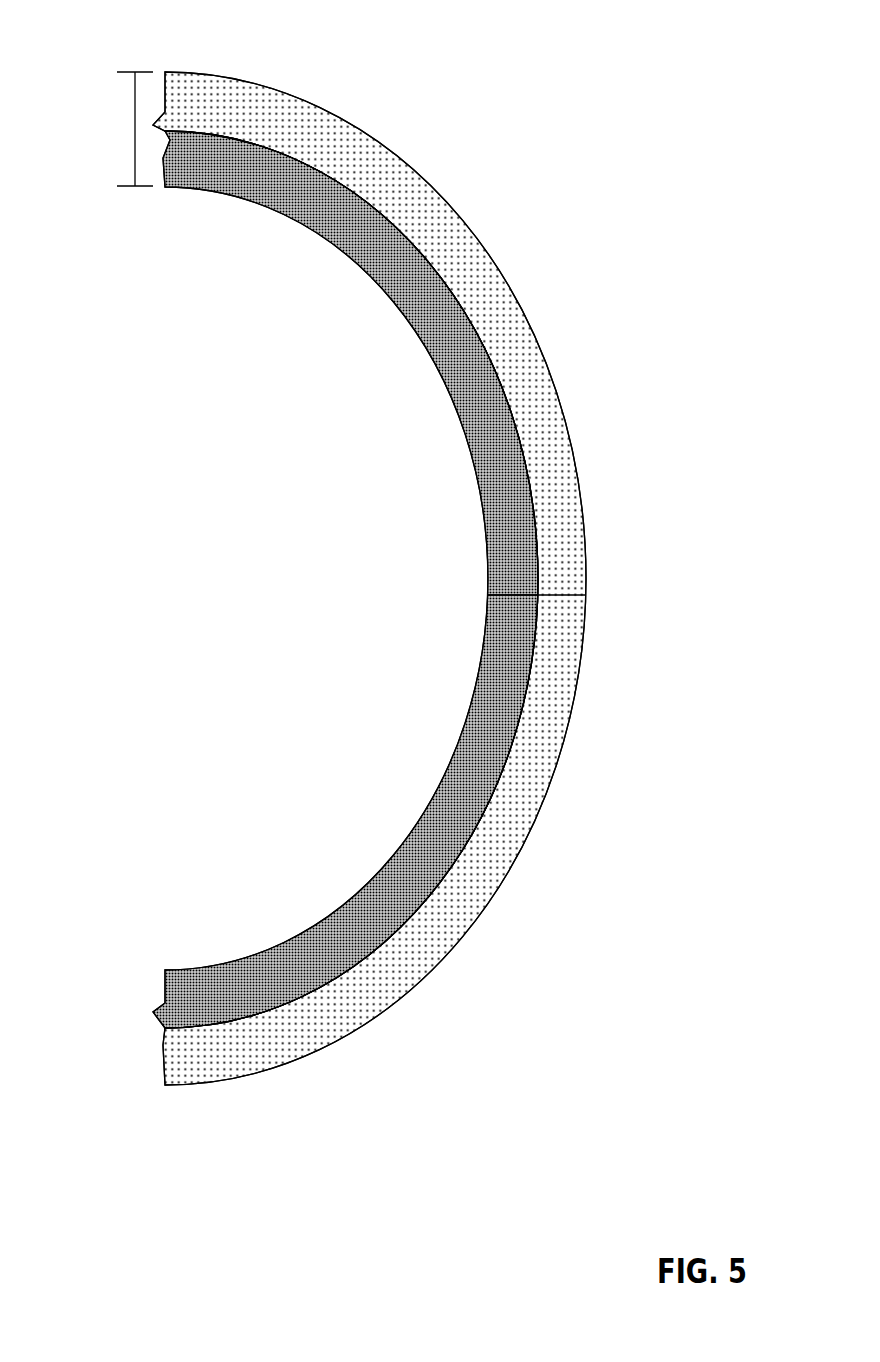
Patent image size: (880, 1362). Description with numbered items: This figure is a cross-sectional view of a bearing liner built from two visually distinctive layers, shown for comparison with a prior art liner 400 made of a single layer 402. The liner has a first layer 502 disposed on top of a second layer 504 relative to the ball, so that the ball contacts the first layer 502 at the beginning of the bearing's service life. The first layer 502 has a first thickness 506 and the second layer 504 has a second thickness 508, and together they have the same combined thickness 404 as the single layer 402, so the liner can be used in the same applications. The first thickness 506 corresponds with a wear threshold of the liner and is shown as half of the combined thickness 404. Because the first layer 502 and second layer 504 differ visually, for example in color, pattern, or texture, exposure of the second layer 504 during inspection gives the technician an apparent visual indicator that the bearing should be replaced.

The prior art liner 400 is at (400, 42).
The single layer 402 is at (258, 84).
The combined thickness 404 is at (135, 125).
The first layer 502 is at (312, 231).
The second layer 504 is at (474, 234).
The first thickness 506 is at (508, 596).
The second thickness 508 is at (548, 596).